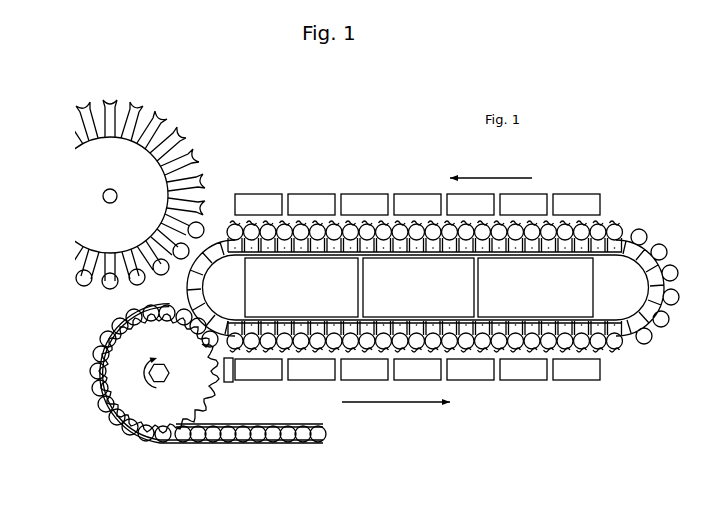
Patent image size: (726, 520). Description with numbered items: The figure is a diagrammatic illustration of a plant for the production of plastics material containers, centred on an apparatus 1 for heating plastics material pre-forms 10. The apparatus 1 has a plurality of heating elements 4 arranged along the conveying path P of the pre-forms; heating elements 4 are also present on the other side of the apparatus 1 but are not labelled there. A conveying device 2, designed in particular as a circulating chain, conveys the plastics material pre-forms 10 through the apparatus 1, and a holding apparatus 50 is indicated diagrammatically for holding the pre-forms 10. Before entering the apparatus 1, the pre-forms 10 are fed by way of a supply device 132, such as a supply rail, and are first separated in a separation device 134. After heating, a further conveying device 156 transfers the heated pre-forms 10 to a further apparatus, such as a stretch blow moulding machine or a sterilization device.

The apparatus 1 is at (425, 165).
The conveying device 2 is at (567, 180).
The heating elements 4 is at (412, 288).
The plastics material pre-forms 10 is at (100, 397).
The holding apparatus 50 is at (672, 297).
The supply device 132 is at (216, 451).
The separation device 134 is at (120, 362).
The conveying device 156 is at (181, 108).